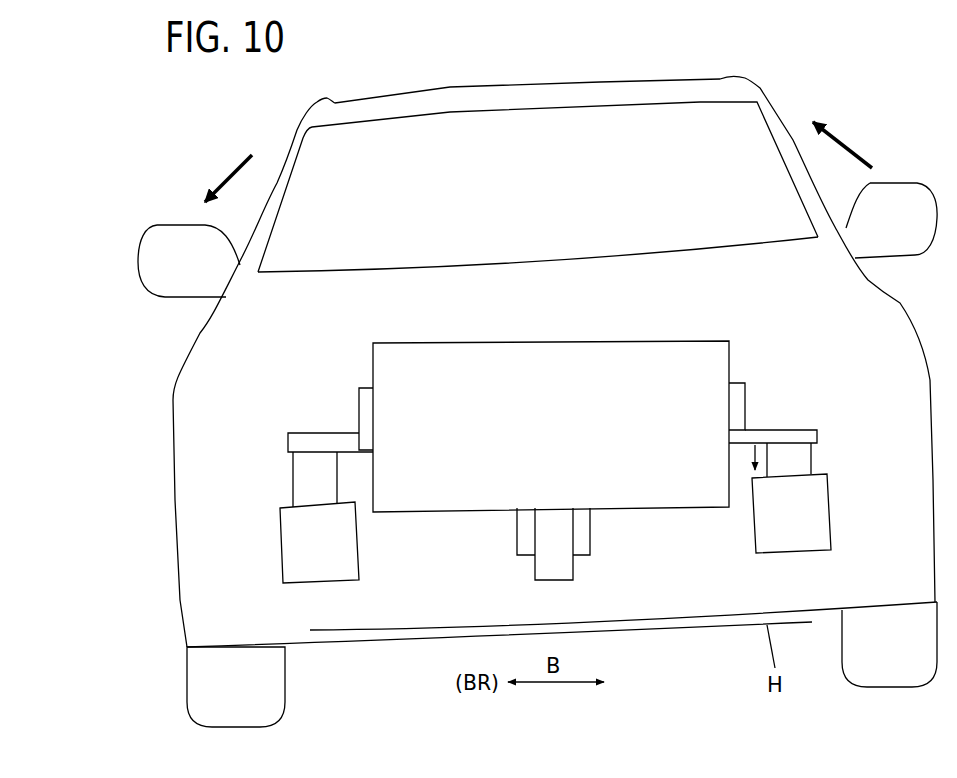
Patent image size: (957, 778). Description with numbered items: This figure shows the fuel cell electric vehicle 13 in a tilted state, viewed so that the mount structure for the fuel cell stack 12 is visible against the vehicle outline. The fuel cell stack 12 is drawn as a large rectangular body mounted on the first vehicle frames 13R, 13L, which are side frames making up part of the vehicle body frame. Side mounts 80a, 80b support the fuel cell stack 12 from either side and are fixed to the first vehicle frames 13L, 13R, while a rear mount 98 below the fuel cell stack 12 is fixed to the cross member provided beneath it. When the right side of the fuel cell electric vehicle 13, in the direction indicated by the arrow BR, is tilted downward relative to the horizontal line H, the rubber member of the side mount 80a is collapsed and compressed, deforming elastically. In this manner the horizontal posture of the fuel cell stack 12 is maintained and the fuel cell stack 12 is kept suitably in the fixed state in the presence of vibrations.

The fuel cell stack 12 is at (663, 334).
The fuel cell electric vehicle 13 is at (768, 91).
The first vehicle frame 13R is at (327, 573).
The first vehicle frame 13L is at (797, 543).
The side mount 80a is at (830, 456).
The side mount 80b is at (285, 477).
The rear mount 98 is at (583, 540).